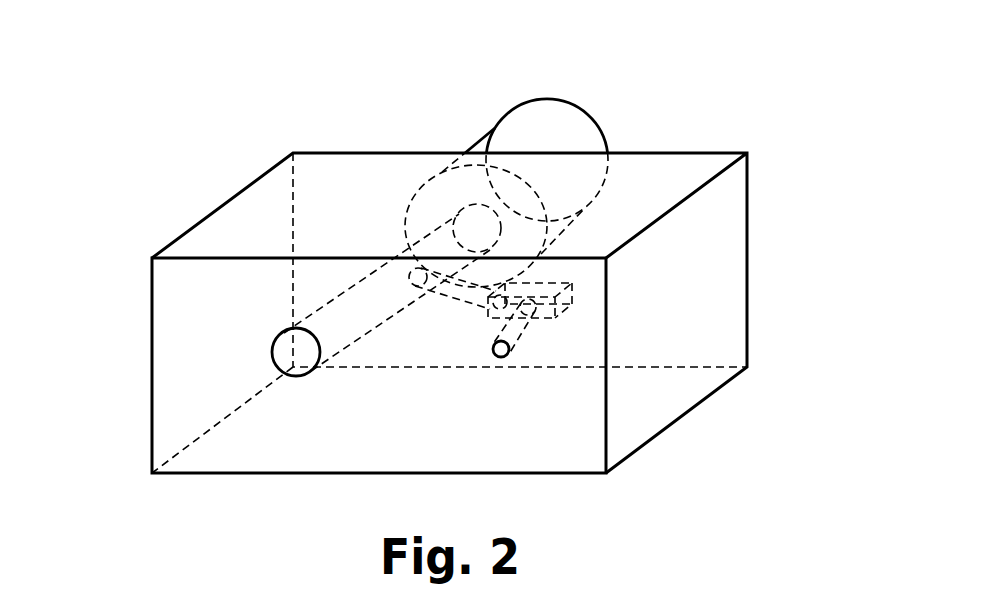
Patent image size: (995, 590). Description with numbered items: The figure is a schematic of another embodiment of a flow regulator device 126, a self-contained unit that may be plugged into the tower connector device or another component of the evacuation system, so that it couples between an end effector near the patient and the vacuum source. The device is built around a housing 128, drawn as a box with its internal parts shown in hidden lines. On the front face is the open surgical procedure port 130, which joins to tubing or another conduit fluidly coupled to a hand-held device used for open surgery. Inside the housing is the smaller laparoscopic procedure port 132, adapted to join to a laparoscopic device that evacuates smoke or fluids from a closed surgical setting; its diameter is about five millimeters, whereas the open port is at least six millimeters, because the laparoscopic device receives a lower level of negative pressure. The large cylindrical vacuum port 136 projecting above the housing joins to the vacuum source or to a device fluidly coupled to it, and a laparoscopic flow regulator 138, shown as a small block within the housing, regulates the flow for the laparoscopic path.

The flow regulator device 126 is at (318, 88).
The housing 128 is at (213, 212).
The open surgical procedure port 130 is at (272, 352).
The laparoscopic procedure port 132 is at (513, 352).
The vacuum port 136 is at (547, 100).
The laparoscopic flow regulator 138 is at (580, 287).